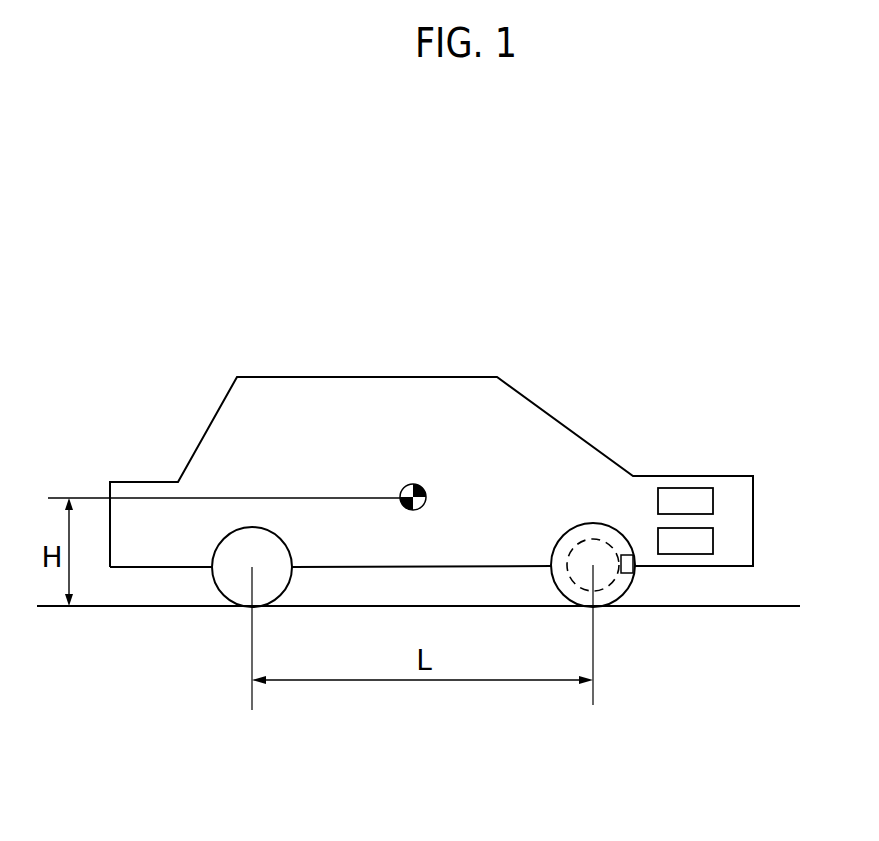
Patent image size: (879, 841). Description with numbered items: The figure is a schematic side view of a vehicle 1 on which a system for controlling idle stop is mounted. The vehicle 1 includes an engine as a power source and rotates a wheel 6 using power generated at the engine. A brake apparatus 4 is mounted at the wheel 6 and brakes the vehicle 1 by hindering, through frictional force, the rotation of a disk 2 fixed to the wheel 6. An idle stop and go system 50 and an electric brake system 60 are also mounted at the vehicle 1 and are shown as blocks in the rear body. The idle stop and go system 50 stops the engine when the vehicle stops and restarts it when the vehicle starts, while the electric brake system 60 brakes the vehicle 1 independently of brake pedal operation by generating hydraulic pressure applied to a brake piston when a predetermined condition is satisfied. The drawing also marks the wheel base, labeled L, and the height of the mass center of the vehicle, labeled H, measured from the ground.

The vehicle 1 is at (576, 392).
The disk 2 is at (610, 586).
The brake apparatus 4 is at (634, 568).
The wheel 6 is at (608, 607).
The idle stop and go (ISG) system 50 is at (713, 500).
The electric brake system 60 is at (713, 540).